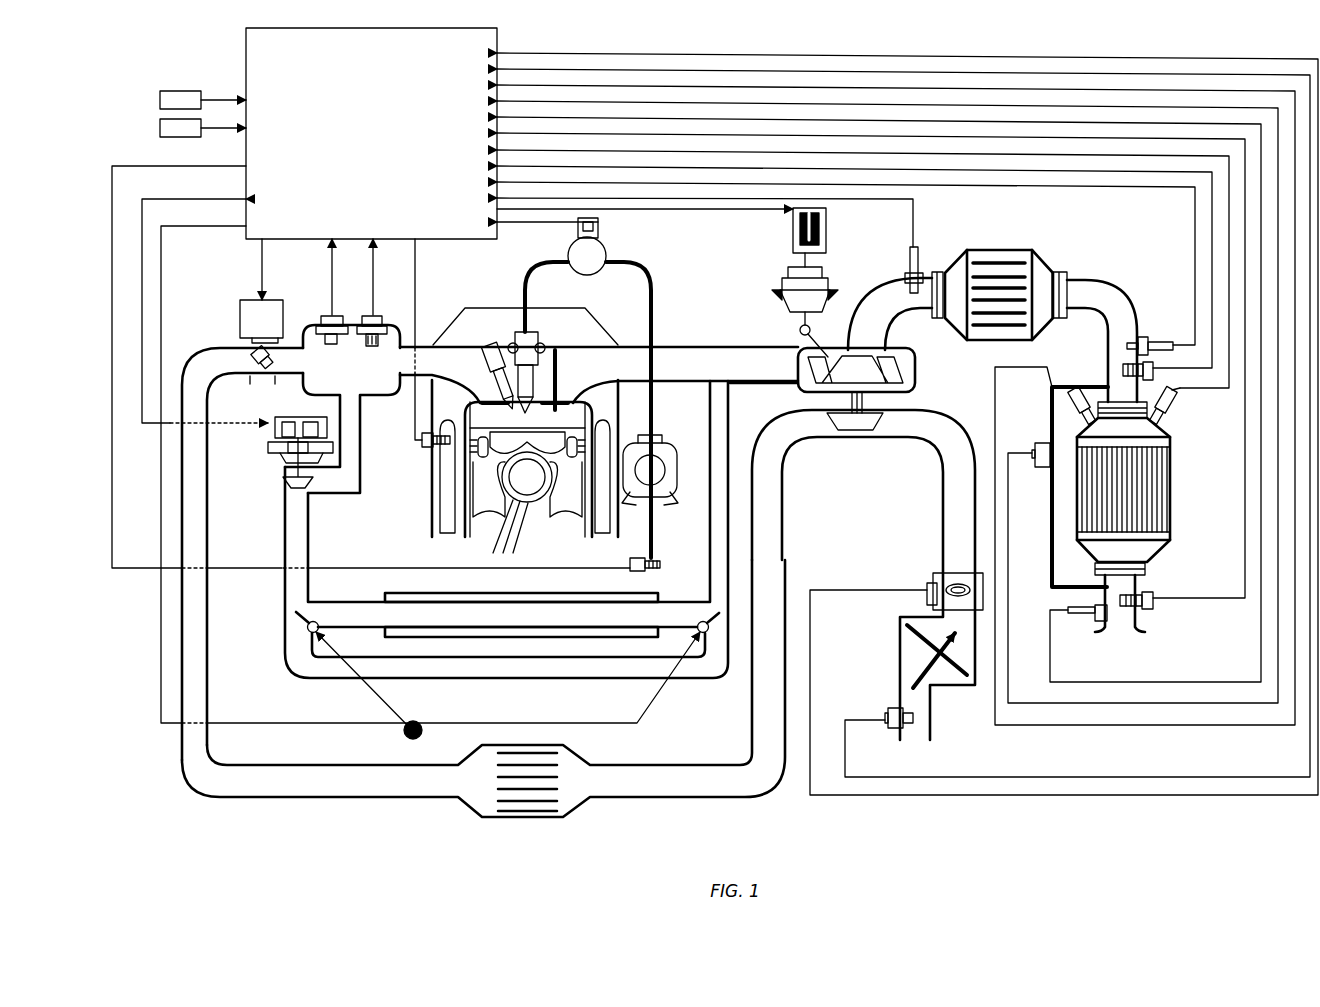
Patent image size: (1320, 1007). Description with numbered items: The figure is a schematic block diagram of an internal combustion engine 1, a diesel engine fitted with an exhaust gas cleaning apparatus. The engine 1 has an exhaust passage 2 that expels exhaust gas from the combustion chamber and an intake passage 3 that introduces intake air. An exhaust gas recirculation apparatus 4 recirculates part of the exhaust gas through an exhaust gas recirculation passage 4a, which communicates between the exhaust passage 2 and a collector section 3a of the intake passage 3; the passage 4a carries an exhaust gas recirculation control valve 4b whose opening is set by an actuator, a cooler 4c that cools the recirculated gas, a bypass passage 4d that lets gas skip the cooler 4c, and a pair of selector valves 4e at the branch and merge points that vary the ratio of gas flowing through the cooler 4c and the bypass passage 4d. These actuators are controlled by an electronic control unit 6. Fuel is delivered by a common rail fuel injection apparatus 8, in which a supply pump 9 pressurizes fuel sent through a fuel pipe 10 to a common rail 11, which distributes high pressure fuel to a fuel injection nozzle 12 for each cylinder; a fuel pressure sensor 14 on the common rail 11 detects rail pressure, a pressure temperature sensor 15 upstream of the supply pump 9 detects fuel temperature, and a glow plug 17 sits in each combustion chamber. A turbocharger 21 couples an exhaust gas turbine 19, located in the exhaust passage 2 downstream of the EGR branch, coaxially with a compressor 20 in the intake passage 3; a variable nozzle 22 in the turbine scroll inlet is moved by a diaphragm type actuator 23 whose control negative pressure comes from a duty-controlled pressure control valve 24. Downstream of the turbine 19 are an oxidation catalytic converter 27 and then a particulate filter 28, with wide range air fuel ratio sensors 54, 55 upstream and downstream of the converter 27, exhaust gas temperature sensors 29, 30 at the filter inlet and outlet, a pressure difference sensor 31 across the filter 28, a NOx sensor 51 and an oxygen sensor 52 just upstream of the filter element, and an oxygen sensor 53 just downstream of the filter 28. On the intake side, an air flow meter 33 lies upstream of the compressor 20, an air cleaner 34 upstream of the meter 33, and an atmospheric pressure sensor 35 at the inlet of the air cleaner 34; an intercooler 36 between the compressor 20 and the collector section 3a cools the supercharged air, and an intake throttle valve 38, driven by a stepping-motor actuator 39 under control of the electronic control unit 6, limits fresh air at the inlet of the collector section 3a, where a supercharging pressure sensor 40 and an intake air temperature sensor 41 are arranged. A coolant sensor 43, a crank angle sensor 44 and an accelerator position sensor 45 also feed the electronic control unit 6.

The internal combustion engine 1 is at (412, 525).
The exhaust passage 2 is at (742, 388).
The intake passage 3 is at (207, 668).
The collector section 3a is at (382, 395).
The exhaust gas recirculation apparatus 4 is at (700, 690).
The exhaust gas recirculation passage 4a is at (285, 545).
The exhaust gas recirculation control valve 4b is at (283, 478).
The cooler 4c is at (543, 593).
The bypass passage 4d is at (435, 667).
The selector valves 4e is at (307, 630).
The electronic control unit 6 is at (246, 50).
The common rail fuel injection apparatus 8 is at (688, 302).
The supply pump 9 is at (678, 452).
The fuel pipe 10 is at (660, 294).
The common rail 11 is at (597, 273).
The fuel injection nozzle 12 is at (522, 332).
The fuel pressure sensor 14 is at (598, 228).
The pressure temperature sensor 15 is at (660, 562).
The glow plug 17 is at (492, 345).
The exhaust gas turbine 19 is at (892, 350).
The compressor 20 is at (855, 432).
The turbocharger 21 is at (936, 367).
The variable nozzle 22 is at (803, 372).
The diaphragm type actuator 23 is at (773, 295).
The pressure control valve 24 is at (828, 227).
The oxidation catalytic converter 27 is at (1012, 250).
The particulate filter 28 is at (1170, 488).
The exhaust gas temperature sensor 29 is at (1123, 368).
The exhaust gas temperature sensor 30 is at (1140, 612).
The pressure difference sensor 31 is at (1040, 443).
The air flow meter 33 is at (933, 575).
The air cleaner 34 is at (910, 655).
The atmospheric pressure sensor 35 is at (888, 708).
The intercooler 36 is at (545, 745).
The intake throttle valve 38 is at (255, 368).
The actuator 39 is at (240, 312).
The supercharging pressure sensor 40 is at (325, 316).
The intake air temperature sensor 41 is at (370, 316).
The coolant sensor 43 is at (420, 447).
The crank angle sensor 44 is at (170, 91).
The accelerator position sensor 45 is at (160, 128).
The NOx sensor 51 is at (1180, 406).
The oxygen sensor 52 is at (1072, 382).
The oxygen sensor 53 is at (1092, 621).
The wide range air fuel ratio sensor 54 is at (918, 255).
The wide range air fuel ratio sensor 55 is at (1148, 337).